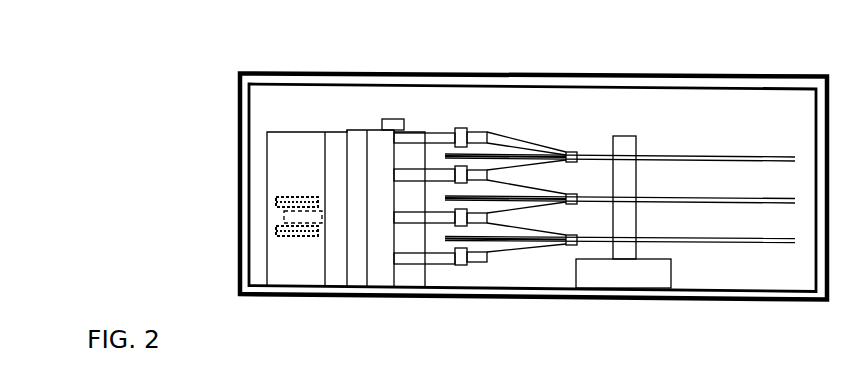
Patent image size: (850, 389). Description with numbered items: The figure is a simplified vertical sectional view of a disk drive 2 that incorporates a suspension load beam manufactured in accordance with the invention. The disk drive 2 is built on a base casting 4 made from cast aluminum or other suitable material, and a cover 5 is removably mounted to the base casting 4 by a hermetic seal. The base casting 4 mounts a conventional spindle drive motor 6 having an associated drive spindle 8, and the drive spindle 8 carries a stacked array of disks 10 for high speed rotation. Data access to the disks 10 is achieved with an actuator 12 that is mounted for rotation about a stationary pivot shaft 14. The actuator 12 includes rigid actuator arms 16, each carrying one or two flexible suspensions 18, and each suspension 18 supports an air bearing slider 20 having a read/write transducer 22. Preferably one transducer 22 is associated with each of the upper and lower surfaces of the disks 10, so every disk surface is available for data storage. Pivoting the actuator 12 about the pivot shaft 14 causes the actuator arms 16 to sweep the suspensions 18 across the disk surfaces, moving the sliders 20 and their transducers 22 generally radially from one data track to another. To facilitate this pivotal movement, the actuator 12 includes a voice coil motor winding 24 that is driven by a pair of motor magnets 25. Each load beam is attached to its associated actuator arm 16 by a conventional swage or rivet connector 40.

The disk drive 2 is at (130, 107).
The base casting 4 is at (425, 298).
The cover 5 is at (693, 76).
The spindle drive motor 6 is at (672, 268).
The drive spindle 8 is at (625, 136).
The disks 10 is at (705, 157).
The actuator 12 is at (380, 273).
The pivot shaft 14 is at (390, 118).
The actuator arms 16 is at (430, 130).
The suspensions 18 is at (511, 123).
The air bearing slider 20 is at (559, 128).
The read/write transducer 22 is at (572, 151).
The voice coil motor winding 24 is at (284, 216).
The motor magnets 25 is at (280, 203).
The swage or rivet connector 40 is at (462, 128).